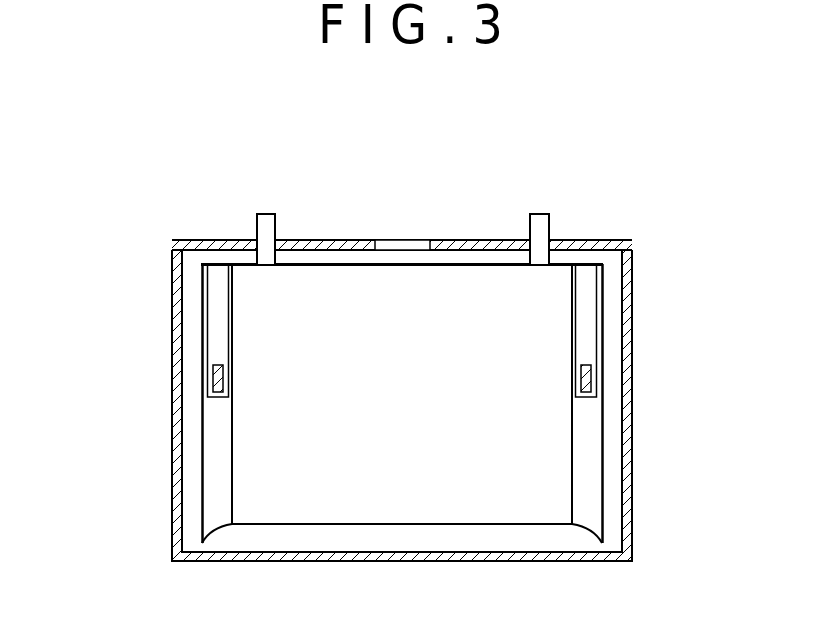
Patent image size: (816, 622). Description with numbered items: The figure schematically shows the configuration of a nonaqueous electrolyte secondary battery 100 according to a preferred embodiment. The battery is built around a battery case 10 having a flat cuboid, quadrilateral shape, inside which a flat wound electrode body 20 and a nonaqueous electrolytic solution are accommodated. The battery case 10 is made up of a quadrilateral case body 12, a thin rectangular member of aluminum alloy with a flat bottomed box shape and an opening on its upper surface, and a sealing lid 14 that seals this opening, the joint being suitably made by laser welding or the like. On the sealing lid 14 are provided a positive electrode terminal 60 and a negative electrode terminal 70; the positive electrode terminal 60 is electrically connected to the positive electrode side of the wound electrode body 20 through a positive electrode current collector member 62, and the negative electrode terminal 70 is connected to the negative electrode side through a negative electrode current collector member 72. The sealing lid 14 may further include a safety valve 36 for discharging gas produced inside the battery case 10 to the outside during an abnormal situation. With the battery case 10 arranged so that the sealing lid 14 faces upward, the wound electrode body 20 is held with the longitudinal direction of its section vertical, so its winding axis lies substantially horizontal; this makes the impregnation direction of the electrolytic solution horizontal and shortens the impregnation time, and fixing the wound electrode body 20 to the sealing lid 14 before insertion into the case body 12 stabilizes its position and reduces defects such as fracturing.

The nonaqueous electrolyte secondary battery 100 is at (629, 152).
The battery case 10 is at (634, 373).
The case body 12 is at (626, 539).
The sealing lid 14 is at (498, 240).
The safety valve 36 is at (414, 240).
The wound electrode body 20 is at (351, 291).
The positive electrode terminal 60 is at (263, 214).
The negative electrode terminal 70 is at (536, 213).
The positive electrode current collector member 62 is at (219, 321).
The negative electrode current collector member 72 is at (585, 300).